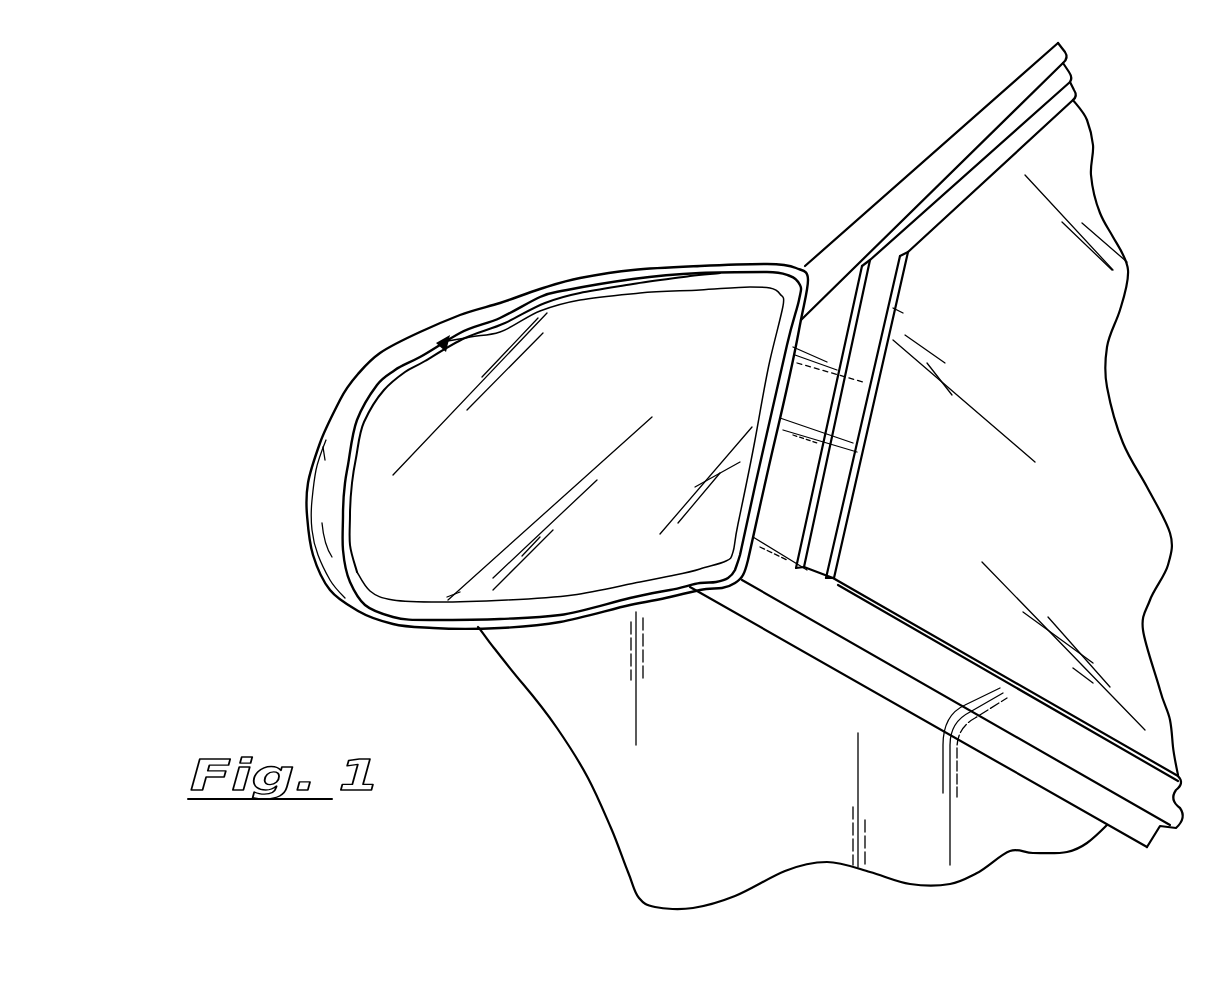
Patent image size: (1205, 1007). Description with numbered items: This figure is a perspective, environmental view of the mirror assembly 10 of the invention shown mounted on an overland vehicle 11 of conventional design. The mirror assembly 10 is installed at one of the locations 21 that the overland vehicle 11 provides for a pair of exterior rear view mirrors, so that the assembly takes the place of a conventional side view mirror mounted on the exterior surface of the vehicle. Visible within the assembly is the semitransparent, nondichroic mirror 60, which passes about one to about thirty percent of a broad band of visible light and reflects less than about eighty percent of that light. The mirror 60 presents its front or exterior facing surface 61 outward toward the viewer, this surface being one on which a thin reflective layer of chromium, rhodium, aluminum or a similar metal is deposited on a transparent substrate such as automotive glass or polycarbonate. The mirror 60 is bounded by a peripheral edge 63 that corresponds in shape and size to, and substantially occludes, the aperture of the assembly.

The mirror assembly 10 is at (490, 184).
The overland vehicle 11 is at (762, 757).
The locations for a pair of exterior rear view mirrors 21 is at (271, 395).
The semitransparent, nondichroic mirror 60 is at (697, 334).
The front or exterior facing surface 61 is at (417, 394).
The peripheral edge 63 is at (630, 293).